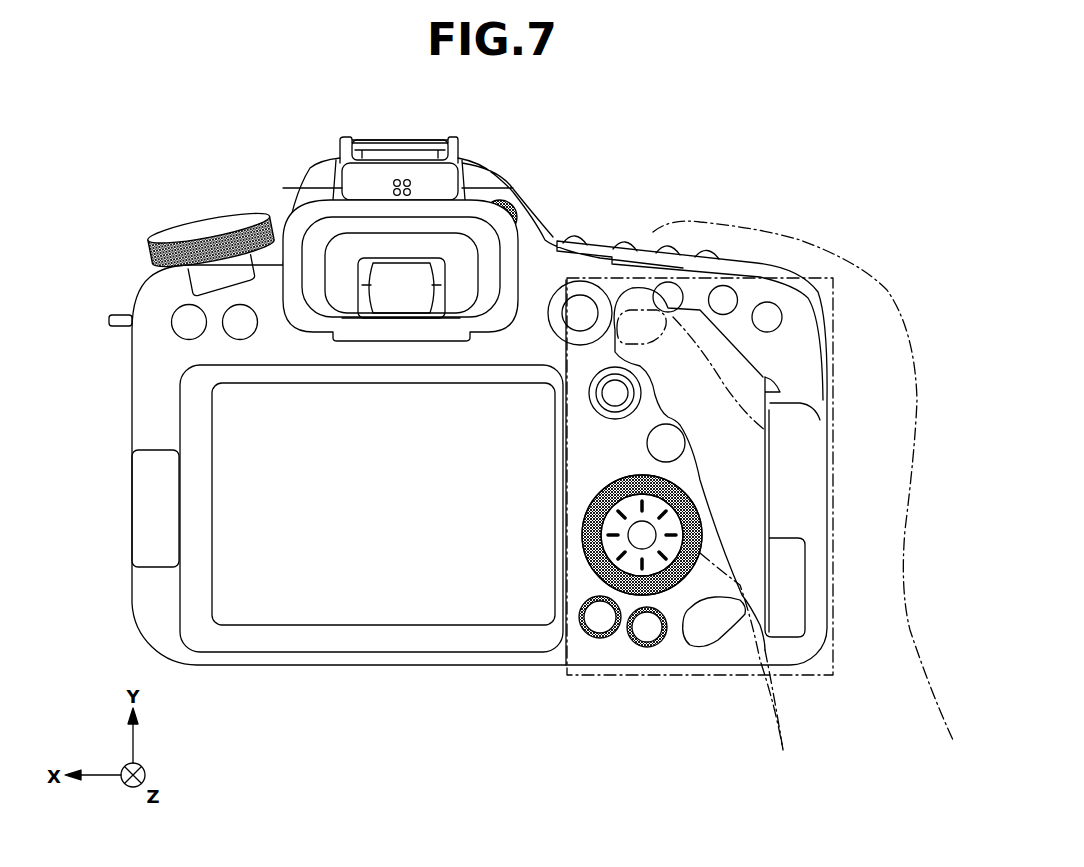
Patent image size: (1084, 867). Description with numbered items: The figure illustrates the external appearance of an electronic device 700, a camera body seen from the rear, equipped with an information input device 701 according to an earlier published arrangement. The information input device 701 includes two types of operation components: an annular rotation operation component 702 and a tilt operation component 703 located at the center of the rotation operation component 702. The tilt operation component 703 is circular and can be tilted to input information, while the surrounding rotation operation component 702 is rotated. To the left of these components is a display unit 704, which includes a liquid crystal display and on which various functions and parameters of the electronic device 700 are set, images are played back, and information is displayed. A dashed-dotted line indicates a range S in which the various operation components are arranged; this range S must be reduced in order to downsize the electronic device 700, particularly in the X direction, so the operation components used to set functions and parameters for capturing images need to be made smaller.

The electronic device 700 is at (471, 447).
The information input device 701 is at (647, 634).
The rotation operation component 702 is at (627, 597).
The tilt operation component 703 is at (672, 625).
The display unit 704 is at (468, 596).
The range S is at (833, 330).